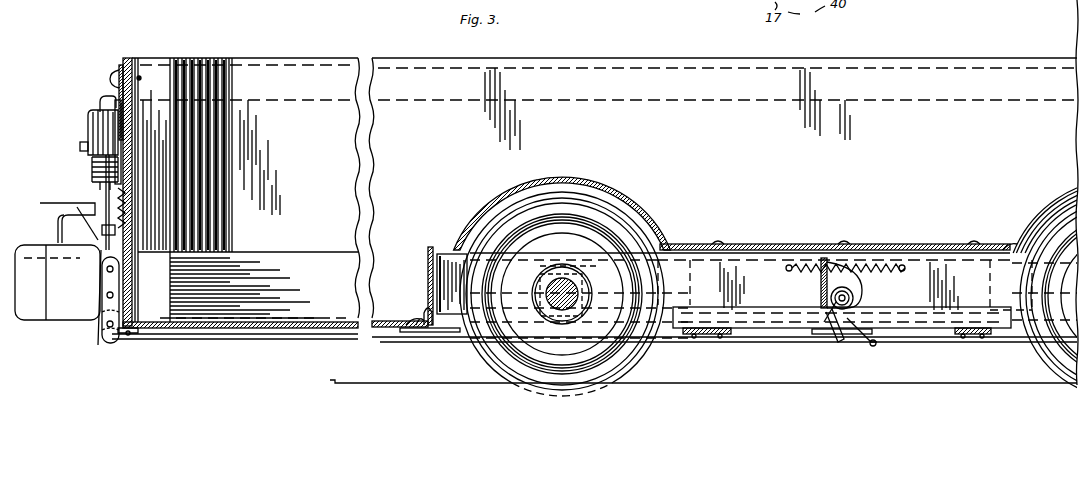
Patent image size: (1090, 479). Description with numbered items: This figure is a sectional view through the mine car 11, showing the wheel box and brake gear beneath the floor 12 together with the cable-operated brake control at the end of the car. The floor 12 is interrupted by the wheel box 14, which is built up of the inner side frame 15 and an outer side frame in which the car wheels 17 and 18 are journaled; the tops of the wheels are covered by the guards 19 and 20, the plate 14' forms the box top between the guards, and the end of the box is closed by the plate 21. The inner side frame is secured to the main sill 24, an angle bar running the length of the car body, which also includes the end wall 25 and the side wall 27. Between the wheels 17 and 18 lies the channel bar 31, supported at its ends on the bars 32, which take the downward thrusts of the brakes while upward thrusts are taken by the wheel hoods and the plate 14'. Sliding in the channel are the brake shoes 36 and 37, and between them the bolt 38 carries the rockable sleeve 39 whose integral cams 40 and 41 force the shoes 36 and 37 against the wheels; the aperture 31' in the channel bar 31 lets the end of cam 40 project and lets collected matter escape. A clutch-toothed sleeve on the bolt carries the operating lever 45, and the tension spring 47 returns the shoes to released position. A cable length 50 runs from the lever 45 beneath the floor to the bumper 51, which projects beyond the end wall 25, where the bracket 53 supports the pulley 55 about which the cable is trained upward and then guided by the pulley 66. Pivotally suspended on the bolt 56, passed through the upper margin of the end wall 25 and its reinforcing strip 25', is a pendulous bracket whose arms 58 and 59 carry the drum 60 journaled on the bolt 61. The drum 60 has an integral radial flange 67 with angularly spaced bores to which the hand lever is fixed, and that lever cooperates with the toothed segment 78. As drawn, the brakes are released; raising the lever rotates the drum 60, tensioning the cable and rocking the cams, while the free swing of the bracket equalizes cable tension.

The mine car 11 is at (666, 55).
The floor 12 is at (312, 319).
The wheel box 14 is at (833, 237).
The plate 14' is at (776, 228).
The inner side frame 15 is at (444, 254).
The car wheel 17 is at (632, 352).
The car wheel 18 is at (1042, 344).
The guard 19 is at (632, 202).
The guard 20 is at (1052, 198).
The plate 21 is at (428, 285).
The main sill 24 is at (291, 250).
The end wall 25 is at (144, 181).
The reinforcing strip 25' is at (129, 84).
The side wall 27 is at (578, 66).
The channel bar 31 is at (842, 333).
The aperture 31' is at (827, 351).
The bars 32 is at (704, 335).
The brake shoe 36 is at (738, 269).
The brake shoe 37 is at (932, 260).
The bolt 38 is at (854, 298).
The sleeve 39 is at (826, 295).
The cam 40 is at (836, 342).
The cam 41 is at (853, 258).
The operating lever 45 is at (868, 345).
The tension spring 47 is at (806, 268).
The cable length 50 is at (198, 342).
The bumper 51 is at (80, 320).
The bracket 53 is at (105, 329).
The pulley 55 is at (129, 334).
The bolt 56 is at (110, 78).
The arm 58 is at (88, 128).
The arm 59 is at (122, 139).
The drum 60 is at (92, 176).
The bolt 61 is at (80, 149).
The pulley 66 is at (100, 248).
The radial flange 67 is at (100, 104).
The toothed segment 78 is at (122, 194).